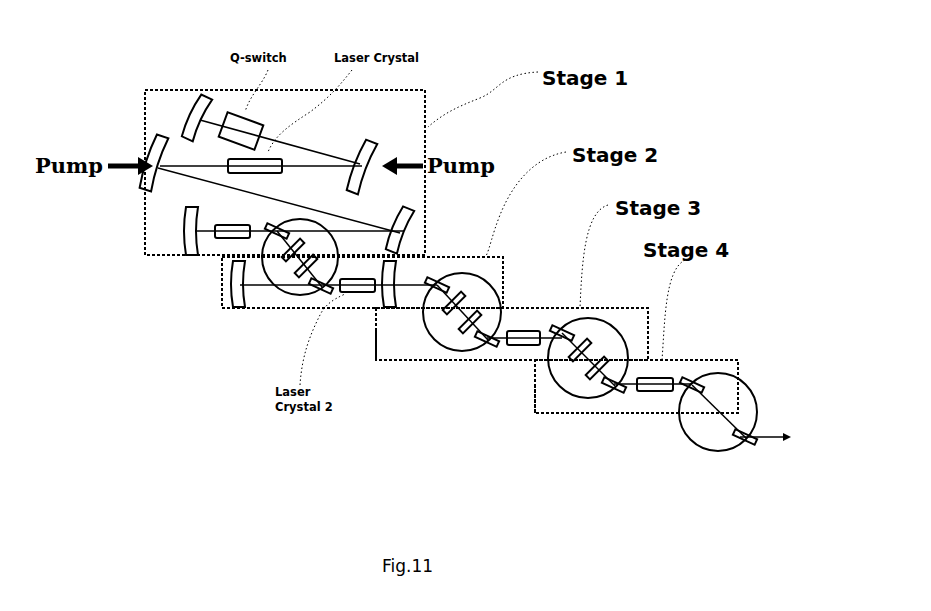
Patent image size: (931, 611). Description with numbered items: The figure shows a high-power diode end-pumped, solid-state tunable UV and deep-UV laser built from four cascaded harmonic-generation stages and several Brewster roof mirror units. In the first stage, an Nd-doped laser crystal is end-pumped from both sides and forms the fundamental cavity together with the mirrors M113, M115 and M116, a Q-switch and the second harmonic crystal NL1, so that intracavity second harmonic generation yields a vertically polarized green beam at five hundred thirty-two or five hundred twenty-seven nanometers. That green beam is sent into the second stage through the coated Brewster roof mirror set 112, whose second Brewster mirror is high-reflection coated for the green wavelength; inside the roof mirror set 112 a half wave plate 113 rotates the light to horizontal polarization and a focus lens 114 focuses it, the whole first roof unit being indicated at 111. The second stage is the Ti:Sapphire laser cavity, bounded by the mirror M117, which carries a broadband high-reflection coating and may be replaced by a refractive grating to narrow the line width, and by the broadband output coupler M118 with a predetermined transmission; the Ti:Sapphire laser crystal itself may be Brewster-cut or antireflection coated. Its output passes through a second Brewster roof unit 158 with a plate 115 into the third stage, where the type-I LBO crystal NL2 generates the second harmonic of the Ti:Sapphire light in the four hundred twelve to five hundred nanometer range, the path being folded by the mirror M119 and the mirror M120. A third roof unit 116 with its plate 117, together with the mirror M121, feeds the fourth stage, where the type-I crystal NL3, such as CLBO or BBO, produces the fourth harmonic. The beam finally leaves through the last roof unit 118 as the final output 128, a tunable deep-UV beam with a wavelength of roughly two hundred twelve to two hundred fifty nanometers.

The mirror M113 is at (150, 140).
The mirror M115 is at (185, 240).
The mirror M116 is at (420, 222).
The mirror M117 is at (232, 290).
The broadband output coupler M118 is at (500, 258).
The mirror M119 is at (390, 366).
The mirror M120 is at (622, 306).
The mirror M121 is at (542, 395).
The second harmonic crystal NL1 is at (214, 237).
The type-I LBO crystal NL2 is at (522, 347).
The type-I crystal NL3 is at (660, 396).
The first frequency conversion stage housing 111 is at (270, 318).
The coated Brewster roof mirror set 112 is at (248, 310).
The half wave plate 113 is at (248, 305).
The focus lens 114 is at (290, 312).
The output plate of stage 2 115 is at (462, 352).
The third frequency conversion stage housing 116 is at (580, 400).
The output plate of stage 3 117 is at (618, 395).
The fourth frequency conversion stage housing 118 is at (720, 454).
The second frequency conversion stage housing 158 is at (410, 362).
The final output 128 is at (778, 440).